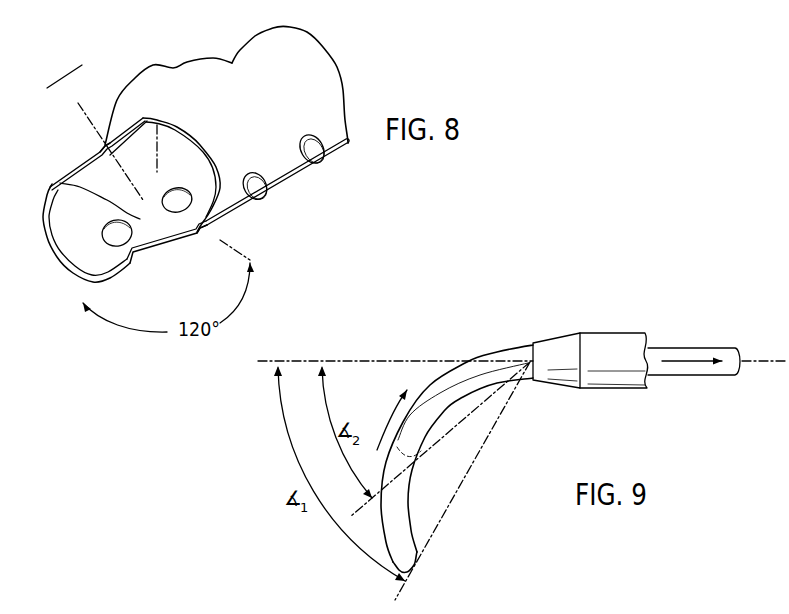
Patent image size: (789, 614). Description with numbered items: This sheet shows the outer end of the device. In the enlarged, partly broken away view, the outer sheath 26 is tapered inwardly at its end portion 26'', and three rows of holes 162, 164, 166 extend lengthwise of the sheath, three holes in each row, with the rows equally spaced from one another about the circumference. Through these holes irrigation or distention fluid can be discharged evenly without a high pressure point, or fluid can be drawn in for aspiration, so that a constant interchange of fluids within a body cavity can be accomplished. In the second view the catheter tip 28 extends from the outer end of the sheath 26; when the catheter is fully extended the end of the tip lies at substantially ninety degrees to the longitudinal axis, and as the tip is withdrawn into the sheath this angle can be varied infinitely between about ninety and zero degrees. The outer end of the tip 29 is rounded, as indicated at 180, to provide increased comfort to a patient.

In FIG. 8, the outer sheath 26 is at (253, 125).
In FIG. 9, the outer sheath 26 is at (621, 335).
In FIG. 8, the tapered outer end of the sheath 26'' is at (119, 191).
In FIG. 9, the tapered outer end of the sheath 26'' is at (546, 335).
In FIG. 9, the catheter tip 28 is at (410, 490).
In FIG. 9, the tip 29 is at (697, 368).
In FIG. 8, the row of holes 162 is at (268, 206).
In FIG. 8, the row of holes 164 is at (105, 143).
In FIG. 8, the row of holes 166 is at (212, 212).
In FIG. 9, the rounded outer end of the tip 180 is at (412, 567).